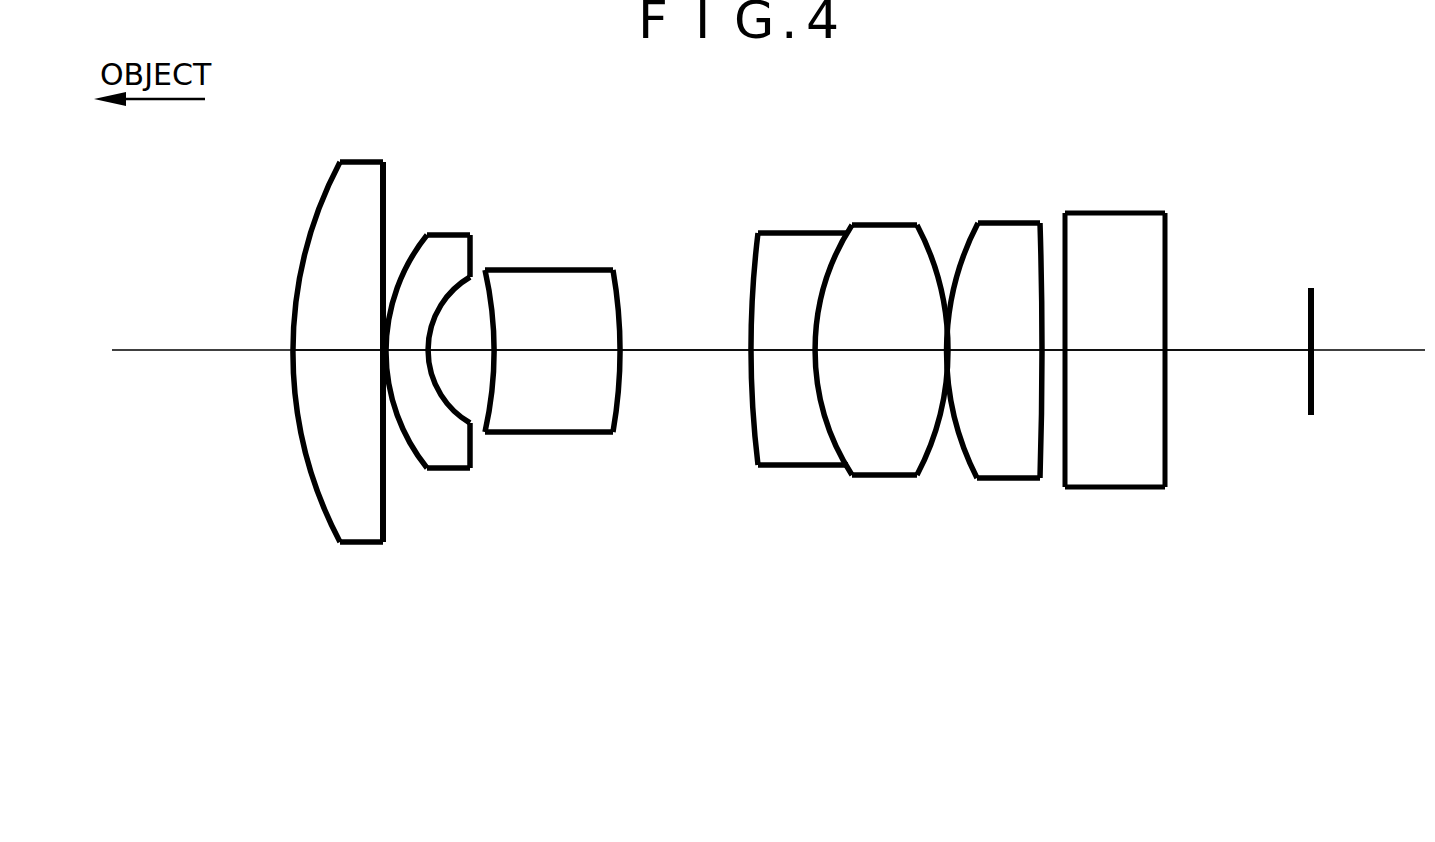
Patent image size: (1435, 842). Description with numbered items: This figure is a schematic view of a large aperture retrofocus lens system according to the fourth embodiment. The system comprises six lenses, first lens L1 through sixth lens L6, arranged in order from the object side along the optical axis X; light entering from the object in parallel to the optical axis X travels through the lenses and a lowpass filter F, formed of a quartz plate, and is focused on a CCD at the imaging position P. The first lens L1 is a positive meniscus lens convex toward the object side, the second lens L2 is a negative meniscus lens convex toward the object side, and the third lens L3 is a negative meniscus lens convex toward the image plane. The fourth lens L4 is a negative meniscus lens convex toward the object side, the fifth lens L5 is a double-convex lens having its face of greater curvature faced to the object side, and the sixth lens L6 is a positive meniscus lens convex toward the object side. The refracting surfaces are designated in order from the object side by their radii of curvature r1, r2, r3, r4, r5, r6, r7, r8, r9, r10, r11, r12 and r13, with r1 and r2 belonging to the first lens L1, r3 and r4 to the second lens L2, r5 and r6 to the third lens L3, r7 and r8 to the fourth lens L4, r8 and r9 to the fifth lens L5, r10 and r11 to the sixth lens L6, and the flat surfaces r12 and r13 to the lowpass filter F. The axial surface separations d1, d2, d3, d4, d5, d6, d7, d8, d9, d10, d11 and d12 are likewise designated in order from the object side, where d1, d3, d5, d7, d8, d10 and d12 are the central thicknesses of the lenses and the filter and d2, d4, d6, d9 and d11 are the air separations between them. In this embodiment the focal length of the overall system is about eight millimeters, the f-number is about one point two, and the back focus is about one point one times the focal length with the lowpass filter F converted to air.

The first lens L1 is at (332, 386).
The second lens L2 is at (454, 365).
The third lens L3 is at (582, 347).
The fourth lens L4 is at (790, 344).
The fifth lens L5 is at (881, 350).
The sixth lens L6 is at (1026, 367).
The lowpass filter F is at (1167, 350).
The imaging position P is at (1315, 350).
The optical axis X is at (1220, 350).
The radius of curvature of first refracting surface r1 is at (325, 516).
The radius of curvature of second refracting surface r2 is at (392, 524).
The radius of curvature of third refracting surface r3 is at (412, 455).
The radius of curvature of fourth refracting surface r4 is at (464, 414).
The radius of curvature of fifth refracting surface r5 is at (493, 410).
The radius of curvature of sixth refracting surface r6 is at (620, 410).
The radius of curvature of seventh refracting surface r7 is at (752, 440).
The radius of curvature of eighth refracting surface r8 is at (820, 440).
The radius of curvature of ninth refracting surface r9 is at (930, 460).
The radius of curvature of tenth refracting surface r10 is at (968, 465).
The radius of curvature of eleventh refracting surface r11 is at (1045, 462).
The radius of curvature of twelfth refracting surface r12 is at (1065, 436).
The radius of curvature of thirteenth refracting surface r13 is at (1167, 460).
The first axial surface separation d1 is at (329, 349).
The second axial surface separation d2 is at (391, 348).
The third axial surface separation d3 is at (409, 346).
The fourth axial surface separation d4 is at (459, 348).
The fifth axial surface separation d5 is at (557, 350).
The sixth axial surface separation d6 is at (676, 350).
The seventh axial surface separation d7 is at (778, 350).
The eighth axial surface separation d8 is at (877, 349).
The ninth axial surface separation d9 is at (947, 345).
The tenth axial surface separation d10 is at (992, 348).
The eleventh axial surface separation d11 is at (1053, 350).
The twelfth axial surface separation d12 is at (1105, 350).